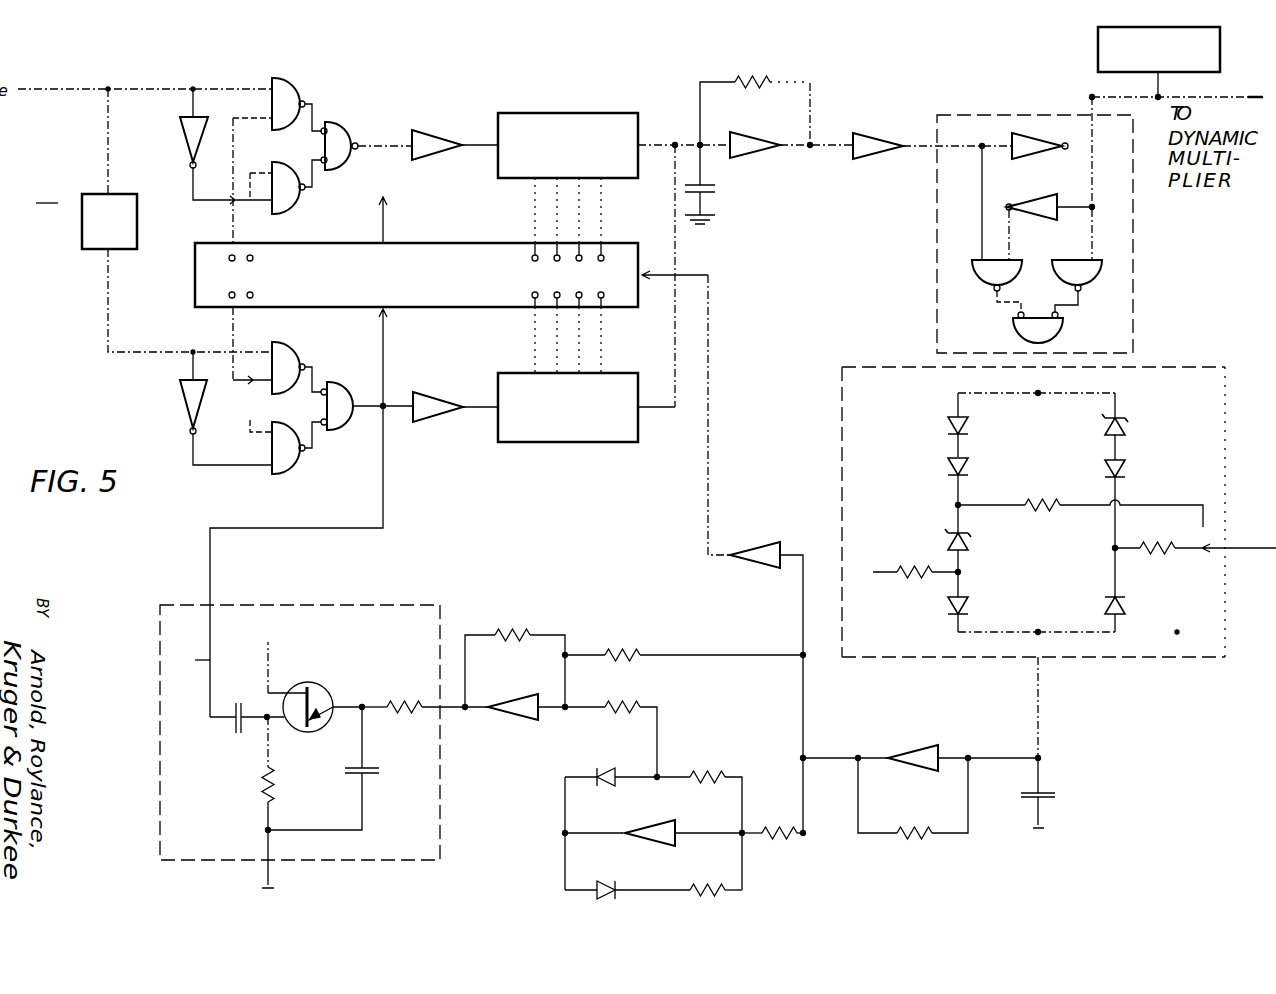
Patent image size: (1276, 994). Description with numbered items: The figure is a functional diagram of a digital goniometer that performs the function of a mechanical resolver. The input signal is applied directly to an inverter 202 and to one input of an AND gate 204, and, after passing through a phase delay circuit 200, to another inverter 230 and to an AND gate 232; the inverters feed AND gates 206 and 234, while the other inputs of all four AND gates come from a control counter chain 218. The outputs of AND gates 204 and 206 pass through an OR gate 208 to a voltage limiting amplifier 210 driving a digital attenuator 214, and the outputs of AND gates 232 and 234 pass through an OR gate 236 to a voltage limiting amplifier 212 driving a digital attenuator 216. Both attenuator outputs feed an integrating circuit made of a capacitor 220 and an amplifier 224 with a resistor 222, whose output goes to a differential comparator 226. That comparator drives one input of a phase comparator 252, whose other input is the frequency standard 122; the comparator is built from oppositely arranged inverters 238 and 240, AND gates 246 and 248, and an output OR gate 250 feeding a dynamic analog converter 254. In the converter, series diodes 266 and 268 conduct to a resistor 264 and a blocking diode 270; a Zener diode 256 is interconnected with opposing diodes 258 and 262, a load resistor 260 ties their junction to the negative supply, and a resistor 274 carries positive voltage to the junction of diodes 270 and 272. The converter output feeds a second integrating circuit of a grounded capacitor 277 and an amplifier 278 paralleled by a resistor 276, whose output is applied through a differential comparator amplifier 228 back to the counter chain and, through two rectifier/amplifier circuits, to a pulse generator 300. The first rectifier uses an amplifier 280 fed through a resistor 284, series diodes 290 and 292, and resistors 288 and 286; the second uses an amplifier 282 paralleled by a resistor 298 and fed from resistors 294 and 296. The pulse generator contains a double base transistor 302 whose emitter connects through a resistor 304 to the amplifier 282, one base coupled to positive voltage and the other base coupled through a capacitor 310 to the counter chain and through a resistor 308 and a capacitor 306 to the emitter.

The frequency standard 122 is at (1098, 46).
The phase delay circuit 200 is at (82, 241).
The inverter 202 is at (180, 138).
The AND gate 204 is at (298, 81).
The AND gate 206 is at (300, 208).
The OR gate 208 is at (346, 118).
The voltage limiting amplifier 210 is at (432, 130).
The voltage limiting amplifier 212 is at (438, 423).
The digital attenuator 214 is at (565, 113).
The digital attenuator 216 is at (574, 443).
The control counter chain 218 is at (432, 243).
The capacitor 220 is at (712, 205).
The resistor 222 is at (756, 95).
The amplifier 224 is at (762, 160).
The differential comparator 226 is at (876, 130).
The differential comparator amplifier 228 is at (759, 541).
The inverter 230 is at (180, 413).
The AND gate 232 is at (298, 360).
The AND gate 234 is at (300, 476).
The OR gate 236 is at (345, 433).
The inverter 238 is at (1035, 213).
The inverter 240 is at (1040, 160).
The AND gate 246 is at (980, 286).
The AND gate 248 is at (1097, 286).
The OR gate 250 is at (1063, 332).
The phase comparator 252 is at (1133, 228).
The dynamic analog converter 254 is at (1218, 362).
The Zener diode 256 is at (1127, 423).
The diode 258 is at (1127, 470).
The load resistor 260 is at (1160, 566).
The diode 262 is at (1105, 608).
The resistor 264 is at (1042, 495).
The diode 266 is at (946, 425).
The diode 268 is at (946, 466).
The blocking diode 270 is at (946, 541).
The diode 272 is at (946, 614).
The resistor 274 is at (896, 586).
The resistor 276 is at (919, 845).
The capacitor 277 is at (1050, 793).
The amplifier 278 is at (915, 745).
The amplifier 280 is at (655, 826).
The amplifier 282 is at (518, 722).
The resistor 284 is at (785, 840).
The resistor 286 is at (727, 893).
The resistor 288 is at (710, 770).
The diode 290 is at (612, 885).
The diode 292 is at (603, 765).
The resistor 294 is at (648, 701).
The resistor 296 is at (621, 645).
The resistor 298 is at (513, 625).
The pulse generator 300 is at (412, 602).
The double base transistor 302 is at (318, 683).
The resistor 304 is at (402, 700).
The capacitor 306 is at (374, 776).
The resistor 308 is at (258, 791).
The capacitor 310 is at (232, 735).